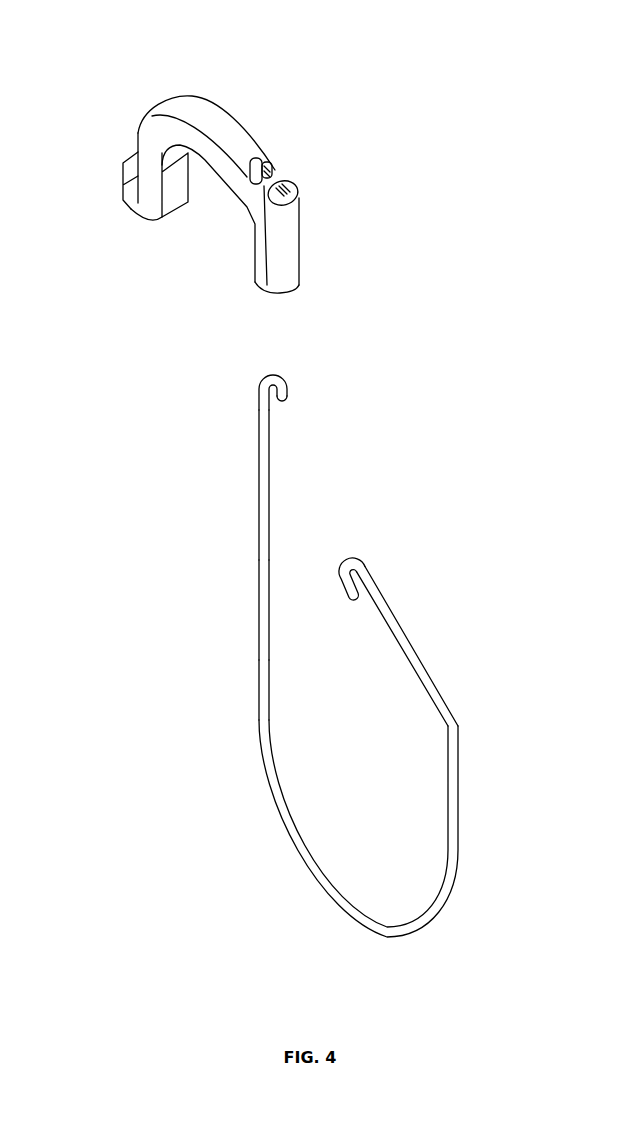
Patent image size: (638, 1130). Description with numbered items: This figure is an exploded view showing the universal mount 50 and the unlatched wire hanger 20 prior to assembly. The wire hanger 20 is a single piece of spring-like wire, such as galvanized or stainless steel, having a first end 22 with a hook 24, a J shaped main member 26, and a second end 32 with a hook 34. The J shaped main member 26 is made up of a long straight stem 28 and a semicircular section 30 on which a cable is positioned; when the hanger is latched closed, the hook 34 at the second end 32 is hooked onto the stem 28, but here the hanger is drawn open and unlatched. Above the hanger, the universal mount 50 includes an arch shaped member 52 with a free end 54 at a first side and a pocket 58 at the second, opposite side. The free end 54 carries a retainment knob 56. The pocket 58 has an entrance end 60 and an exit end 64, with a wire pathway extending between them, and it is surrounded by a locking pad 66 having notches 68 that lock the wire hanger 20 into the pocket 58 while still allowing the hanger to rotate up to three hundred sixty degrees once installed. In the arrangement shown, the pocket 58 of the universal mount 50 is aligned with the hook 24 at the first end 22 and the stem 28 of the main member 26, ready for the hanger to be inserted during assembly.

The wire hanger 20 is at (259, 612).
The first end 22 is at (258, 410).
The hook 24 is at (287, 395).
The J shaped main member 26 is at (259, 725).
The stem 28 is at (259, 507).
The semicircular section 30 is at (293, 877).
The second end 32 is at (383, 600).
The hook 34 is at (350, 593).
The universal mount 50 is at (168, 102).
The arch shaped member 52 is at (212, 117).
The free end 54 is at (143, 198).
The retainment knob 56 is at (123, 170).
The pocket 58 is at (258, 160).
The entrance end 60 is at (281, 295).
The exit end 64 is at (285, 186).
The locking pad 66 is at (288, 240).
The notches 68 is at (270, 180).